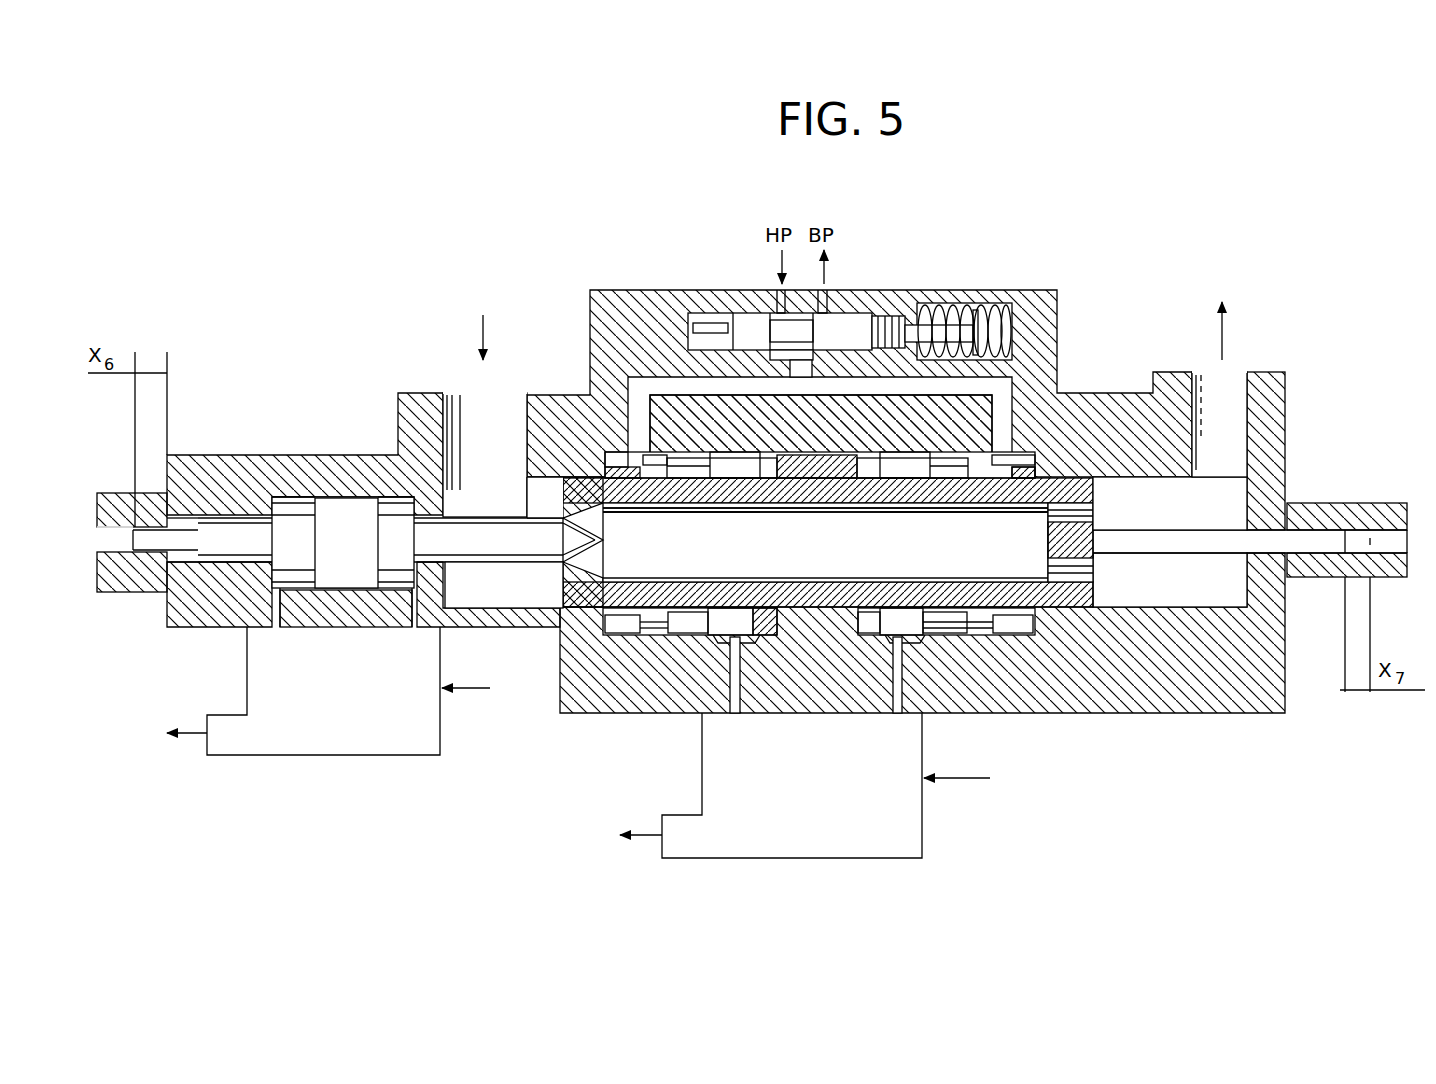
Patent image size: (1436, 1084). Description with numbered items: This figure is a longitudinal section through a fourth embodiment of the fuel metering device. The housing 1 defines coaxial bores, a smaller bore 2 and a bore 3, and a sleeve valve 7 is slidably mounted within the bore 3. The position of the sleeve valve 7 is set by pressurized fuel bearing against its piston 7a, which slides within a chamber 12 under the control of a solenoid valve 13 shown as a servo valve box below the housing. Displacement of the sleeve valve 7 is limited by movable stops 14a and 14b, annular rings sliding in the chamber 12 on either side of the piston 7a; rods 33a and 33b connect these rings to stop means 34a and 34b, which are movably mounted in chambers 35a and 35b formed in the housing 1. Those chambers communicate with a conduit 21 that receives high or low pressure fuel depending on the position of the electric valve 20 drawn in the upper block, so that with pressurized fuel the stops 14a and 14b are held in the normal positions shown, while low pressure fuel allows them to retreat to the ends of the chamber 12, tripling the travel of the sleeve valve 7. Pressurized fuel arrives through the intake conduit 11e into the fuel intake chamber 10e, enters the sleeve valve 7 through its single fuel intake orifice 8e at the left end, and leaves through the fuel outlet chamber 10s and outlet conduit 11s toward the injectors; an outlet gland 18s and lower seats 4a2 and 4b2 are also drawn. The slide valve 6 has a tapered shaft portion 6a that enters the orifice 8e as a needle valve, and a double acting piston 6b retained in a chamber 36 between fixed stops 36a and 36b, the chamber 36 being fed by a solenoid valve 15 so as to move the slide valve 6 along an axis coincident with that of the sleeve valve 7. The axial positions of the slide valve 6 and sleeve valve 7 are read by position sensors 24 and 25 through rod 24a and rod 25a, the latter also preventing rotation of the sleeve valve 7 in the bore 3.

The housing 1 is at (322, 468).
The bore 2 is at (450, 515).
The bore 3 is at (668, 606).
The slide valve 6 is at (503, 535).
The tapered shaft portion 6a is at (538, 567).
The double acting piston 6b is at (358, 572).
The sleeve valve 7 is at (865, 493).
The piston 7a is at (812, 493).
The fuel intake orifice 8e is at (588, 560).
The fuel intake chamber 10e is at (547, 492).
The fuel outlet chamber 10s is at (1195, 590).
The intake conduit 11e is at (468, 410).
The outlet conduit 11s is at (1232, 388).
The chamber 12 is at (770, 495).
The solenoid valve 13 is at (832, 840).
The movable stop 14a is at (900, 493).
The movable stop 14b is at (730, 493).
The solenoid valve 15 is at (335, 735).
The outlet gland 18s is at (1085, 538).
The electric valve 20 is at (850, 298).
The conduit 21 is at (855, 385).
The position sensor 24 is at (150, 505).
The rod 24a is at (160, 540).
The position sensor 25 is at (1342, 505).
The rod 25a is at (1297, 540).
The rod 33a is at (927, 470).
The rod 33b is at (690, 460).
The stop means 34a is at (1010, 462).
The stop means 34b is at (648, 458).
The chamber 35a is at (1030, 470).
The chamber 35b is at (624, 463).
The chamber 36 is at (305, 585).
The fixed stop 36a is at (268, 492).
The fixed stop 36b is at (396, 497).
The lower valve seat 4a2 is at (958, 637).
The lower valve seat 4b2 is at (685, 635).